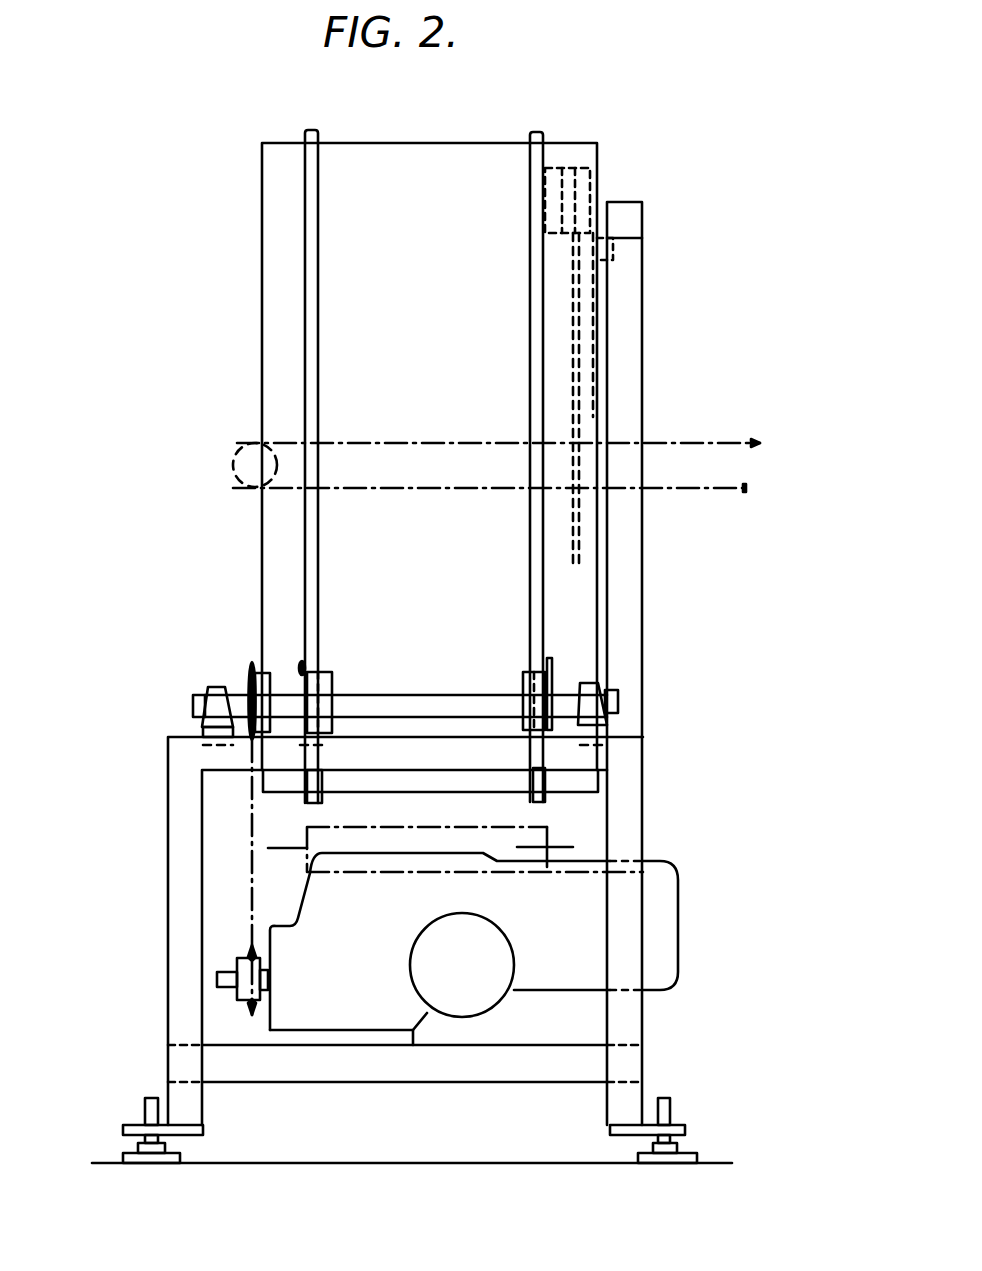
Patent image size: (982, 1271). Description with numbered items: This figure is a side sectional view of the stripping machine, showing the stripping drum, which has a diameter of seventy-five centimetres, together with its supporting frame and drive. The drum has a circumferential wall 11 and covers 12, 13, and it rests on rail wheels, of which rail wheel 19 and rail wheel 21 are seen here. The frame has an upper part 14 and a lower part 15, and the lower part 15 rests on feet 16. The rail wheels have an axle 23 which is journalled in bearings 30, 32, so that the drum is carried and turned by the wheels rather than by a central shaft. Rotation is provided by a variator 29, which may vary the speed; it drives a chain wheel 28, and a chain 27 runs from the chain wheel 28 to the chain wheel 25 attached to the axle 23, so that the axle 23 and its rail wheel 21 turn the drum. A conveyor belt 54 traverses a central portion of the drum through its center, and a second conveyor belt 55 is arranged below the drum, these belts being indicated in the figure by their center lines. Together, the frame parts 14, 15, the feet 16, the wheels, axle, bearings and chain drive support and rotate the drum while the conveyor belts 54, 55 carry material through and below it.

The circumferential wall 11 is at (308, 507).
The cover 12 is at (268, 335).
The cover 13 is at (578, 587).
The upper part of frame 14 is at (630, 357).
The lower part of frame 15 is at (177, 877).
The feet 16 is at (123, 1157).
The rail wheel 19 is at (305, 673).
The rail wheel 21 is at (540, 688).
The axle 23 is at (193, 707).
The chain wheel 25 is at (250, 667).
The chain 27 is at (250, 835).
The chain wheel 28 is at (237, 963).
The variator 29 is at (462, 993).
The bearing 30 is at (207, 685).
The bearing 32 is at (593, 722).
The conveyor belt 54 is at (385, 450).
The conveyor belt 55 is at (510, 830).